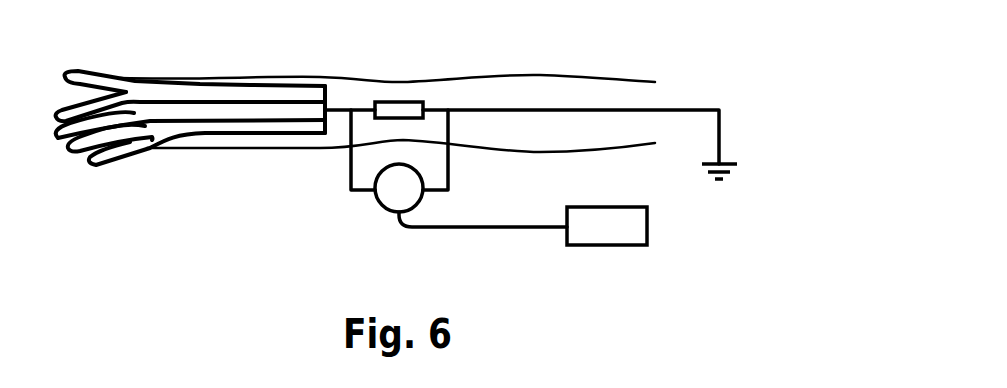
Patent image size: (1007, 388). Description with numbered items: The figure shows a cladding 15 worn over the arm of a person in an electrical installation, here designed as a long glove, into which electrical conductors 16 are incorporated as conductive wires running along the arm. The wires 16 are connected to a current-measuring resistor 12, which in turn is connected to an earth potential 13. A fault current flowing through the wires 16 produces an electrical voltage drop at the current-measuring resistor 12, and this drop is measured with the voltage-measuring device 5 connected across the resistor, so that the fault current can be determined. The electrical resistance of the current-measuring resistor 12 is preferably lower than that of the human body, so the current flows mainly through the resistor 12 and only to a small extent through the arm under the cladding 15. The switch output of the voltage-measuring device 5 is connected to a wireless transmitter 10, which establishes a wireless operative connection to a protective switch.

The electrical conductors 16 is at (210, 87).
The cladding 15 is at (608, 73).
The current-measuring resistor 12 is at (388, 107).
The earth potential 13 is at (722, 138).
The voltage-measuring device 5 is at (383, 205).
The wireless transmitter 10 is at (635, 227).